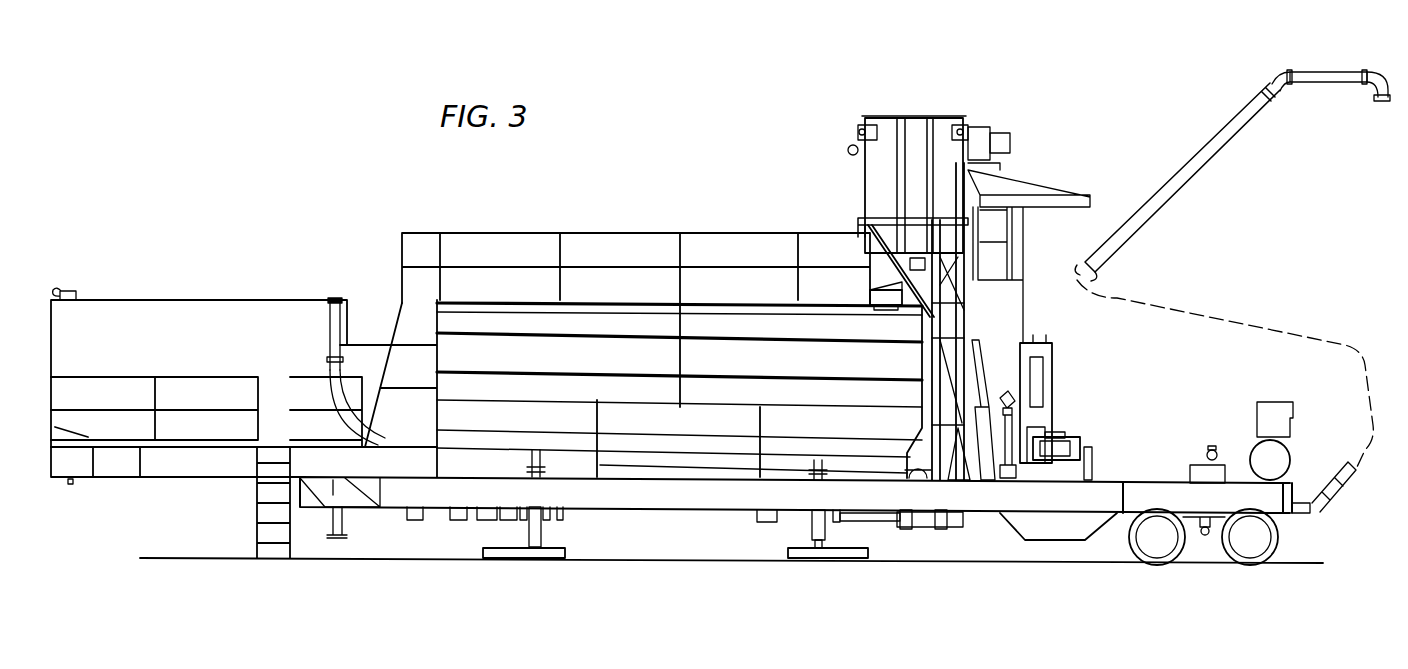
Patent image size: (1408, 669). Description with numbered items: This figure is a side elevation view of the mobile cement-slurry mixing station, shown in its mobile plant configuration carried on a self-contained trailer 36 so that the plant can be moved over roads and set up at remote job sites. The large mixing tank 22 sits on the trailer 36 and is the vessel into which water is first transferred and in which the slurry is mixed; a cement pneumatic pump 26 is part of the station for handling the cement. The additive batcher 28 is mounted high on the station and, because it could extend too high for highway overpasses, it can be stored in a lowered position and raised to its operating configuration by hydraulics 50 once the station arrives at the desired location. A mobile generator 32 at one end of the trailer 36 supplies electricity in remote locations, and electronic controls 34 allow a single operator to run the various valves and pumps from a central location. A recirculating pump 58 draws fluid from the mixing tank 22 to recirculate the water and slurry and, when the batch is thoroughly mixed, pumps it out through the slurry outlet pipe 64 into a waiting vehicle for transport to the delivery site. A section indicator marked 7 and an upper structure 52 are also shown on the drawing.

The section line indicator for FIG. 7 is at (385, 307).
The mixing tank 22 is at (448, 468).
The cement pneumatic pump 26 is at (330, 327).
The additive batcher 28 is at (853, 290).
The mobile generator 32 is at (142, 305).
The electronic controls 34 is at (1052, 355).
The trailer 36 is at (1141, 466).
The hydraulics 50 is at (1012, 425).
The dust collector silo 52 is at (913, 114).
The recirculating pump 58 is at (1062, 463).
The slurry outlet pipe 64 is at (1327, 72).